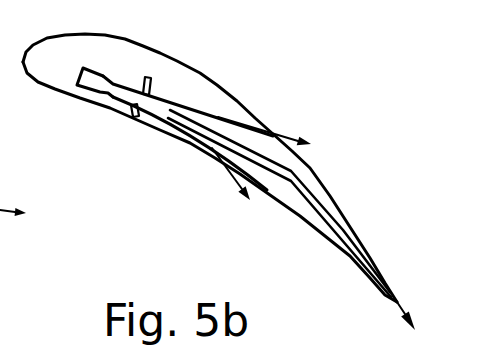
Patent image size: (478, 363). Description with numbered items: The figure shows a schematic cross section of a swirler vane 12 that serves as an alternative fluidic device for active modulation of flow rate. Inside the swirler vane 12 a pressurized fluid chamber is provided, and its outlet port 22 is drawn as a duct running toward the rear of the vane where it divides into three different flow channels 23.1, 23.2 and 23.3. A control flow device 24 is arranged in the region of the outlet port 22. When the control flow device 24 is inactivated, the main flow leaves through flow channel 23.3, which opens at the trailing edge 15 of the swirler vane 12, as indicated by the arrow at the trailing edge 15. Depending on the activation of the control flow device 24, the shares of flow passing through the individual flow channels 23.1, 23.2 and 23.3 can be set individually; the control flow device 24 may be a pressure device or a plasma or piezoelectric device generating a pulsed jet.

The swirler vane 12 is at (187, 60).
The trailing edge 15 is at (377, 275).
The outlet port 22 is at (112, 93).
The flow channel 23.1 is at (217, 116).
The flow channel 23.2 is at (185, 130).
The flow channel 23.3 is at (325, 212).
The control flow device 24 is at (144, 78).